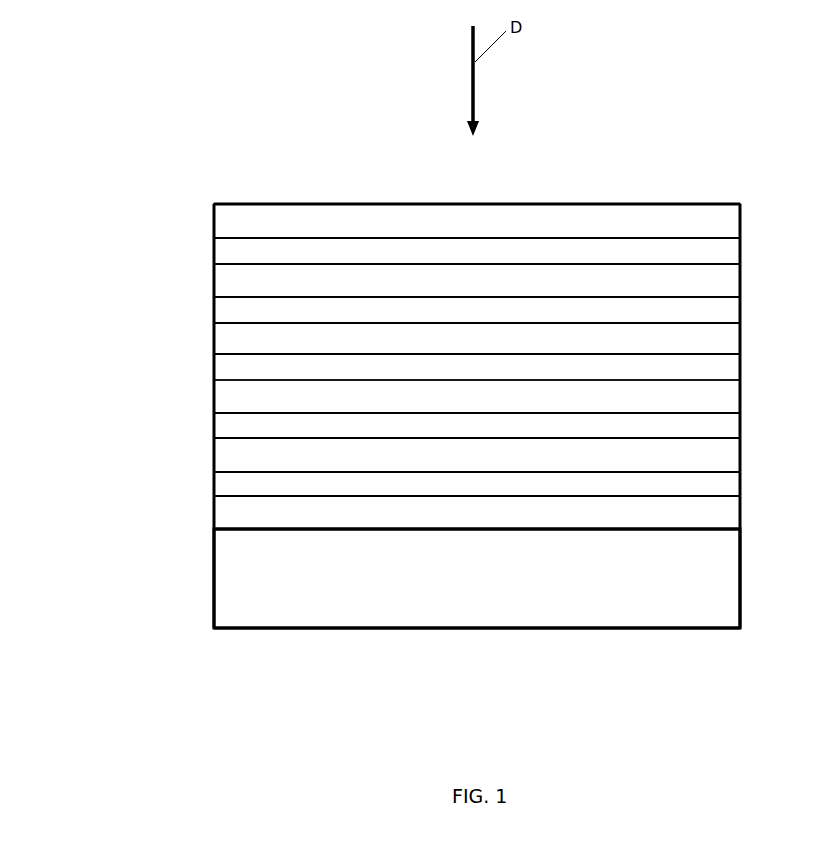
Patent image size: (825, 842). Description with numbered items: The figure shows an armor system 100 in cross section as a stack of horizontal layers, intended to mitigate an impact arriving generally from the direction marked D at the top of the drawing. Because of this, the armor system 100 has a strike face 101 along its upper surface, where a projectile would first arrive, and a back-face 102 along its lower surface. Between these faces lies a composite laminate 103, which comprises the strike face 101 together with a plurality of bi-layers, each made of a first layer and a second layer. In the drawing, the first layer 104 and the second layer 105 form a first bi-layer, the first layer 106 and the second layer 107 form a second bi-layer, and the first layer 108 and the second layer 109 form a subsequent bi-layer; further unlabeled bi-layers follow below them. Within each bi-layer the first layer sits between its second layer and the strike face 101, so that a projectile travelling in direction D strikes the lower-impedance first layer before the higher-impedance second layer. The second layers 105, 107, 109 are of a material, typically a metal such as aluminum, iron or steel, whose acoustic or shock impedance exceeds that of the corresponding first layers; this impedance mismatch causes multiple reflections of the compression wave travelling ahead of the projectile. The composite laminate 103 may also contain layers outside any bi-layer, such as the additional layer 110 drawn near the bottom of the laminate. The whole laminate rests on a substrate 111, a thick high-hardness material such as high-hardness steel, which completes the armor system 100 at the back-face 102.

The armor system 100 is at (97, 111).
The strike face 101 is at (699, 202).
The back-face 102 is at (705, 630).
The composite laminate 103 is at (164, 314).
The first layer 104 is at (491, 232).
The second layer 105 is at (491, 261).
The first layer 106 is at (491, 290).
The second layer 107 is at (491, 319).
The first layer 108 is at (491, 346).
The second layer 109 is at (491, 376).
The additional layer 110 is at (491, 519).
The substrate 111 is at (491, 577).